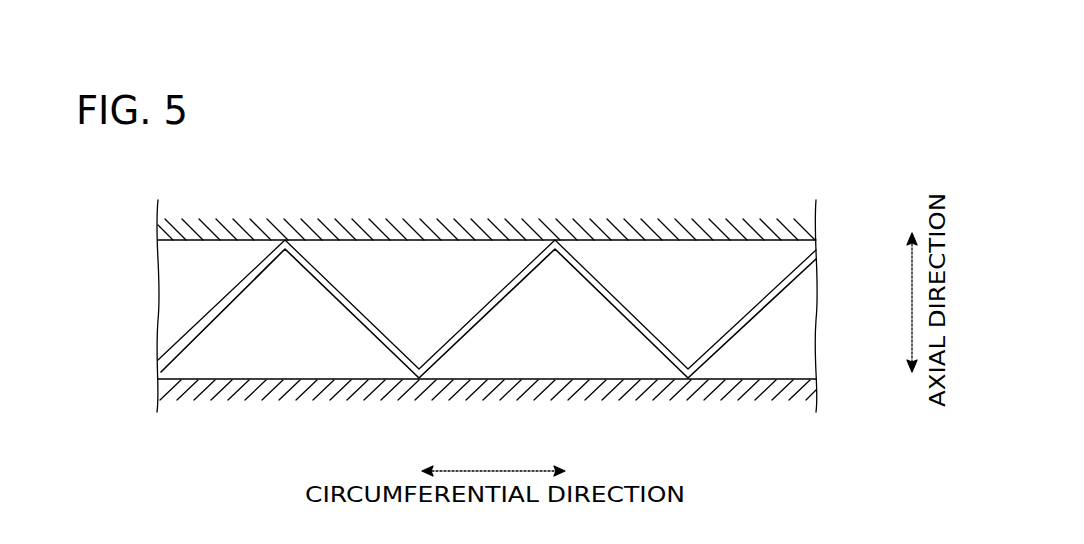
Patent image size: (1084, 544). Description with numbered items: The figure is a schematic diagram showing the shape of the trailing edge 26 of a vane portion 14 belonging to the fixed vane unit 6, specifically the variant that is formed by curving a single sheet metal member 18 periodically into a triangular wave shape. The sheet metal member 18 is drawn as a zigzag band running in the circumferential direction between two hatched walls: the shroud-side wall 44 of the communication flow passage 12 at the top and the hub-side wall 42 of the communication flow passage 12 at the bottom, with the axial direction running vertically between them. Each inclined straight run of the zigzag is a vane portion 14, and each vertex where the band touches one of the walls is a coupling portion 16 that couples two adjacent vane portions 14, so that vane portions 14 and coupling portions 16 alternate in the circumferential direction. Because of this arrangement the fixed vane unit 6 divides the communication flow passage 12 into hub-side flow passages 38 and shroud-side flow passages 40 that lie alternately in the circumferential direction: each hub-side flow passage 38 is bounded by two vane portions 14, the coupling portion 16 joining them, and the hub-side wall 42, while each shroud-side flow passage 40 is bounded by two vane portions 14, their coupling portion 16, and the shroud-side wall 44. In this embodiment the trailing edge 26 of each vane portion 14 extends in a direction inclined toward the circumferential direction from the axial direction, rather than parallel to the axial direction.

The fixed vane unit 6 is at (188, 283).
The communication flow passage 12 is at (800, 342).
The vane portion 14 is at (197, 321).
The coupling portion 16 is at (285, 240).
The single sheet metal member 18 is at (658, 326).
The trailing edge 26 is at (182, 348).
The hub-side flow passage 38 is at (575, 303).
The shroud-side flow passage 40 is at (462, 262).
The hub-side wall 42 is at (594, 380).
The shroud-side wall 44 is at (745, 242).